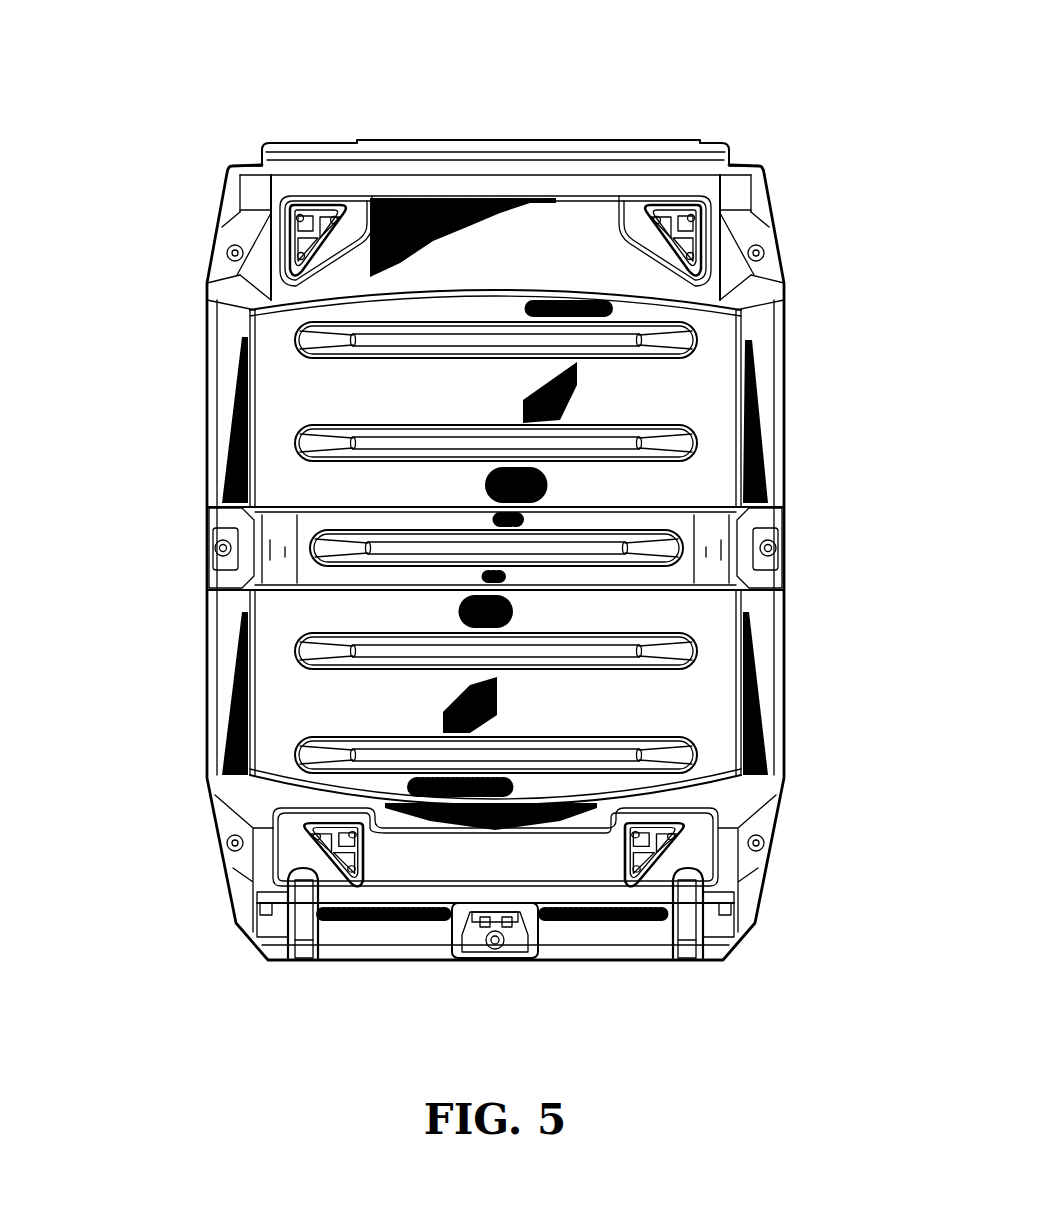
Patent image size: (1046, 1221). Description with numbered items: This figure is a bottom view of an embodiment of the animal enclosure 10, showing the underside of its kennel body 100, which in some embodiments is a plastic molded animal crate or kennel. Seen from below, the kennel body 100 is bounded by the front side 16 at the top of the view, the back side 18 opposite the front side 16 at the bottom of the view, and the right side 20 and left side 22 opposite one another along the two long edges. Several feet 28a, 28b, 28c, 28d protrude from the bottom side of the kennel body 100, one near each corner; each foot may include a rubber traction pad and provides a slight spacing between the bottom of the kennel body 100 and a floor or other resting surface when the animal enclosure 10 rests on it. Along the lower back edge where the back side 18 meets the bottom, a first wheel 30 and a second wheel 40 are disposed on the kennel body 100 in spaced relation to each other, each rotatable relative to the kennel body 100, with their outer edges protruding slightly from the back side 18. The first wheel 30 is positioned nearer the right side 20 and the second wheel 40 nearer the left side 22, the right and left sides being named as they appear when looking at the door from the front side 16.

The animal enclosure 10 is at (840, 89).
The front side 16 is at (640, 142).
The back side 18 is at (420, 960).
The right side 20 is at (787, 458).
The left side 22 is at (203, 482).
The foot 28a is at (315, 203).
The foot 28b is at (682, 200).
The foot 28c is at (630, 890).
The foot 28d is at (343, 890).
The first wheel 30 is at (692, 960).
The second wheel 40 is at (295, 960).
The kennel body 100 is at (784, 720).